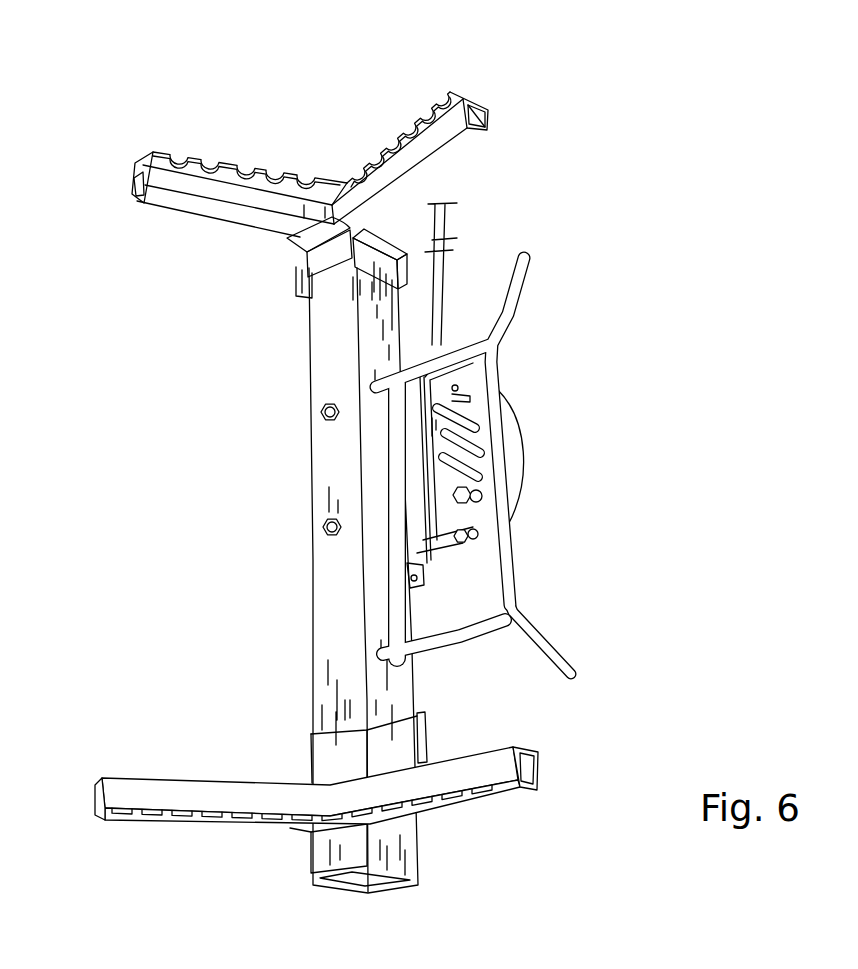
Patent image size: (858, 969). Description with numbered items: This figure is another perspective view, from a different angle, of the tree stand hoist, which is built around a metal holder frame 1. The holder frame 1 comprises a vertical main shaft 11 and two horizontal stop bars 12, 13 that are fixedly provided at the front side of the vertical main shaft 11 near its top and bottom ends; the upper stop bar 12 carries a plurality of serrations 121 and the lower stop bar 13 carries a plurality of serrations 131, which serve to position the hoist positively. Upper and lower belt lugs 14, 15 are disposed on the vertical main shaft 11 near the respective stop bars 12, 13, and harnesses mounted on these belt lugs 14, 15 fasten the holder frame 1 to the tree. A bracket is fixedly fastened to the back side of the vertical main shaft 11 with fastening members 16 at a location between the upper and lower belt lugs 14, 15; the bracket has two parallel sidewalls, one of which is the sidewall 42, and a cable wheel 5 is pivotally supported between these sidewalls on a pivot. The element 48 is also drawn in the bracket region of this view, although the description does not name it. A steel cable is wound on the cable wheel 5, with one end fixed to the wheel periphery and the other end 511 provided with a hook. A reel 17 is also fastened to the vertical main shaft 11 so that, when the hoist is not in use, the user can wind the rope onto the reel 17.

The holder frame 1 is at (349, 131).
The vertical main shaft 11 is at (310, 390).
The horizontal stop bar 12 is at (462, 155).
The serrations 121 is at (240, 170).
The horizontal stop bar 13 is at (527, 745).
The serrations 131 is at (450, 787).
The upper belt lug 14 is at (287, 277).
The lower belt lug 15 is at (427, 730).
The fastening members 16 is at (327, 423).
The reel 17 is at (518, 588).
The cable wheel 5 is at (536, 411).
The other end of steel cable 511 is at (447, 217).
The sidewall 42 is at (477, 487).
The mounting plate 48 is at (413, 579).